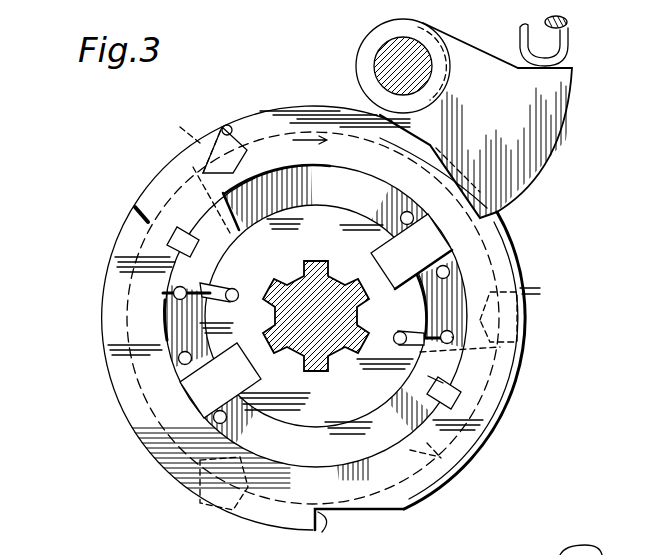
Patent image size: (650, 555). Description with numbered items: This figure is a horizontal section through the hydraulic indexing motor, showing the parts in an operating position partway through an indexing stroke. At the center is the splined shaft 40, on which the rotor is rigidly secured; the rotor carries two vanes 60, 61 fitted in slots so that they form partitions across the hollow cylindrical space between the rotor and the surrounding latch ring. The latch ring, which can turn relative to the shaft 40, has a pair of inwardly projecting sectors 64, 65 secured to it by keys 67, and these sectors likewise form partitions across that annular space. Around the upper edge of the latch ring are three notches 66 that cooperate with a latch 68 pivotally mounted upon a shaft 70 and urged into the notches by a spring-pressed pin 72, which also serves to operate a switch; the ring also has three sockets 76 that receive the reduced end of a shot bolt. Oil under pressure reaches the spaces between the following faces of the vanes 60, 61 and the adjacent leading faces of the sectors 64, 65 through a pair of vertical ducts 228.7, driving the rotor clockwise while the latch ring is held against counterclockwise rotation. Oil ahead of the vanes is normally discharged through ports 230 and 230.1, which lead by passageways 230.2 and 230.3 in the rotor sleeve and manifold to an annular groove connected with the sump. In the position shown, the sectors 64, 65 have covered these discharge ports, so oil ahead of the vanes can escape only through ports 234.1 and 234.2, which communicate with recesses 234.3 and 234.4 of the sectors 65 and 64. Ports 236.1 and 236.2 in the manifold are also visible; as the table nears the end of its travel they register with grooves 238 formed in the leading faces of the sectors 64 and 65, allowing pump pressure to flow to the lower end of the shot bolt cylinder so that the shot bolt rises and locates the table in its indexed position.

The splined shaft 40 is at (338, 345).
The vane 60 is at (392, 253).
The vane 61 is at (198, 397).
The sector 64 is at (208, 232).
The sector 65 is at (453, 383).
The notches 66 is at (132, 214).
The keys 67 is at (180, 238).
The latch 68 is at (545, 110).
The shaft 70 is at (378, 54).
The spring-pressed pin 72 is at (565, 38).
The sockets 76 is at (227, 125).
The vertical ducts 228.7 is at (388, 175).
The port 230 is at (400, 334).
The port 230.1 is at (225, 283).
The passageway 230.2 is at (393, 330).
The passageway 230.3 is at (228, 287).
The port 234.1 is at (450, 273).
The port 234.2 is at (180, 359).
The recess 234.3 is at (505, 335).
The recess 234.4 is at (174, 290).
The port 236.1 is at (452, 335).
The port 236.2 is at (167, 296).
The grooves 238 is at (206, 170).